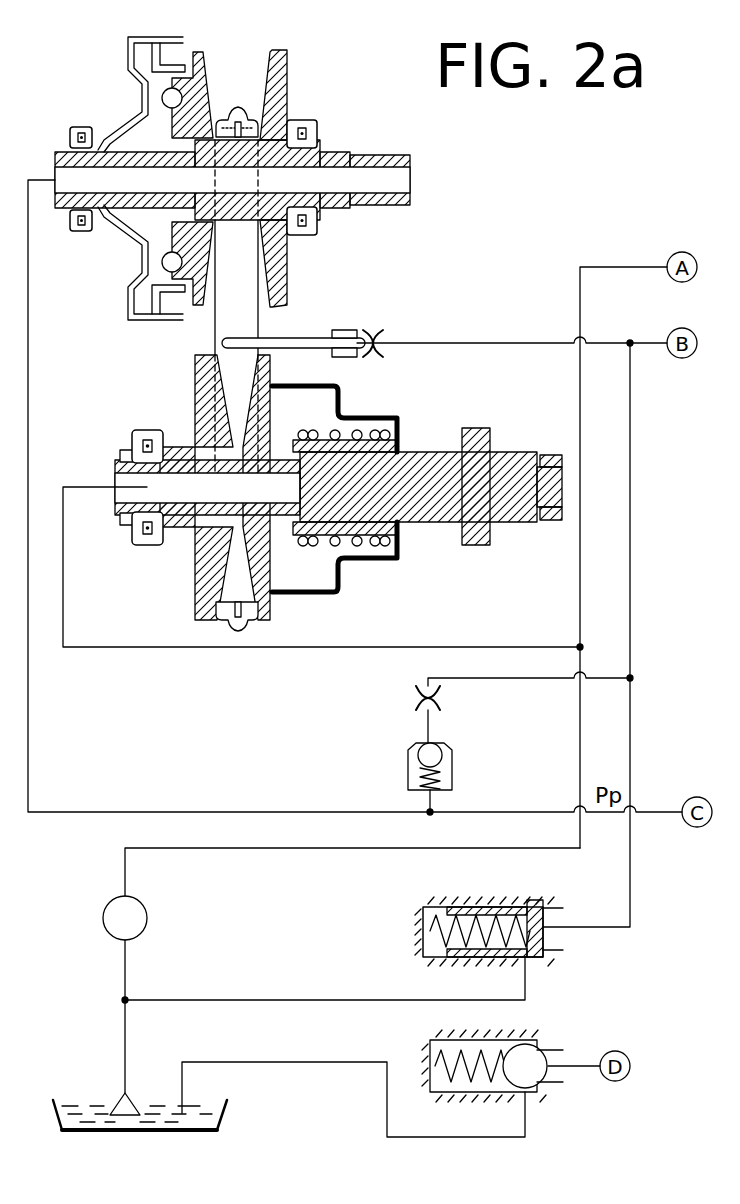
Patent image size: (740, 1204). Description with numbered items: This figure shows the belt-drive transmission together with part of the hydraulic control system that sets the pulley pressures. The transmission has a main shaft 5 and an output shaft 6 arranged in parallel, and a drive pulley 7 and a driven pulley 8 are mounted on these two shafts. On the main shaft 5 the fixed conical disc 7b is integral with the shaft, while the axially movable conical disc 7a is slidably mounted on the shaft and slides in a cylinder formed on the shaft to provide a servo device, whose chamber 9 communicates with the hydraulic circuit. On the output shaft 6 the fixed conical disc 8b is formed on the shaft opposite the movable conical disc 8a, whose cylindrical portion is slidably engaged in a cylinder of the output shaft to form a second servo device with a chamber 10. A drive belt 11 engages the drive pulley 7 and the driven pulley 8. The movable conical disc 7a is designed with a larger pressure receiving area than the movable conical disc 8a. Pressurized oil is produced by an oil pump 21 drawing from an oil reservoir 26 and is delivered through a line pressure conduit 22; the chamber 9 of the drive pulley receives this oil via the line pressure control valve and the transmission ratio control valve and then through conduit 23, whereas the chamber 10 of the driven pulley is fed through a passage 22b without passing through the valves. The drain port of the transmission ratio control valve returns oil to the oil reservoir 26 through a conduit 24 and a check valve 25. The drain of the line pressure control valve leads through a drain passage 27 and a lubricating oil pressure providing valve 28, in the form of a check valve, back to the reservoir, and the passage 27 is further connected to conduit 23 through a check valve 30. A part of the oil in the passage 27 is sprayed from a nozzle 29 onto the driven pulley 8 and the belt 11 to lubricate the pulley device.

The main shaft 5 is at (335, 147).
The output shaft 6 is at (487, 477).
The drive pulley 7 is at (251, 157).
The movable conical disc 7a is at (201, 58).
The fixed conical disc 7b is at (283, 90).
The driven pulley 8 is at (214, 496).
The movable conical disc 8a is at (270, 607).
The fixed conical disc 8b is at (207, 577).
The chamber 9 is at (140, 90).
The chamber 10 is at (368, 546).
The drive belt 11 is at (247, 105).
The oil pump 21 is at (147, 932).
The line pressure conduit 22 is at (585, 264).
The passage 22b is at (447, 645).
The conduit 23 is at (652, 812).
The conduit 24 is at (568, 1065).
The check valve 25 is at (490, 1022).
The oil reservoir 26 is at (220, 1128).
The drain passage 27 is at (632, 885).
The lubricating oil pressure providing valve 28 is at (477, 905).
The nozzle 29 is at (297, 334).
The check valve 30 is at (452, 782).